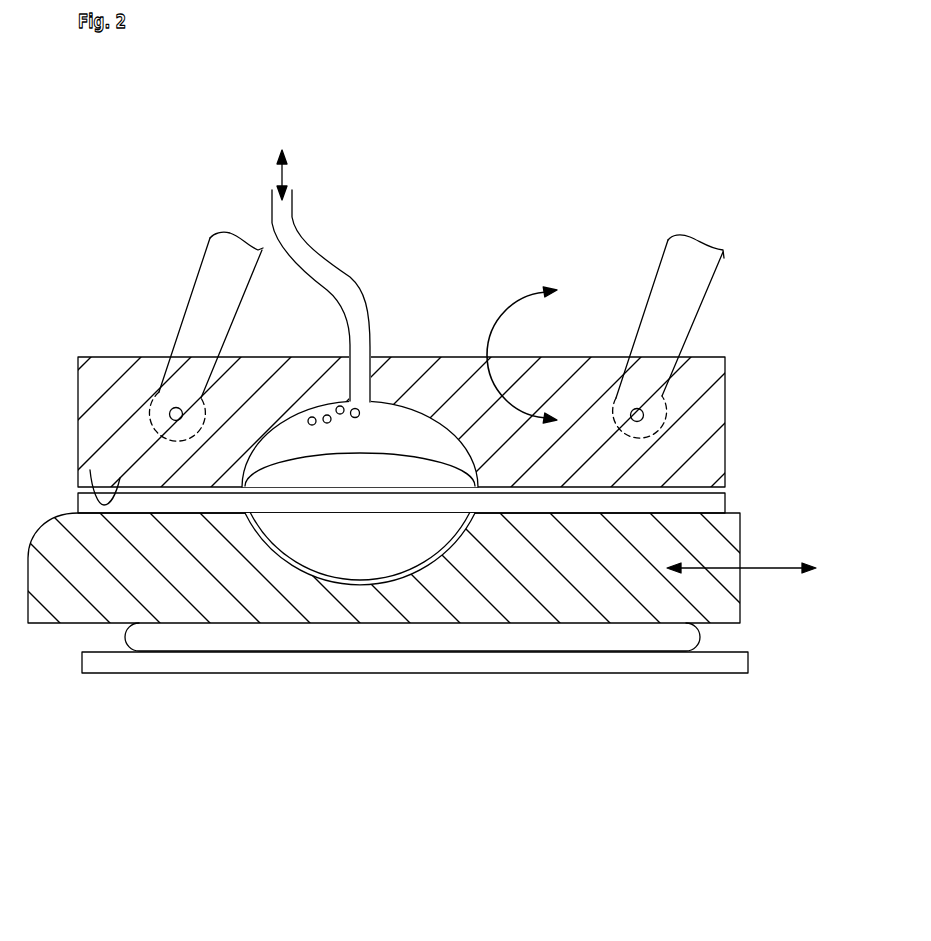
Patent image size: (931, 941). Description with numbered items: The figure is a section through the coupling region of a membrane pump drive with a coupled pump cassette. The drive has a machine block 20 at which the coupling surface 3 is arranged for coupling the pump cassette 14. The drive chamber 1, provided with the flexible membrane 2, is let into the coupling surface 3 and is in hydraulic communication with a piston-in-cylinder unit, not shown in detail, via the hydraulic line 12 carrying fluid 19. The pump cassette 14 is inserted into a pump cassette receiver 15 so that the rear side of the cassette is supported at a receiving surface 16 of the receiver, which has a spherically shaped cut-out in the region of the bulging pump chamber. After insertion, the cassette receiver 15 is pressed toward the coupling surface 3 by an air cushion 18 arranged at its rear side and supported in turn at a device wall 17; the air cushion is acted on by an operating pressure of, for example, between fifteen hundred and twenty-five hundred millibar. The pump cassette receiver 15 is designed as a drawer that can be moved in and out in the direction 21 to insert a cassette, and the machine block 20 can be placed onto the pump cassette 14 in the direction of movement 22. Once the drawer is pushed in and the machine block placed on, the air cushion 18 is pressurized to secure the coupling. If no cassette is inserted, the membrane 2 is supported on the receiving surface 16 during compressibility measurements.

The drive chamber 1 is at (285, 448).
The flexible membrane 2 is at (412, 458).
The coupling surface 3 is at (90, 470).
The hydraulic line 12 is at (337, 283).
The pump cassette 14 is at (702, 507).
The pump cassette receiver 15 is at (98, 587).
The receiving surface 16 is at (442, 560).
The device wall 17 is at (592, 665).
The air cushion 18 is at (393, 633).
The fluid 19 is at (350, 397).
The machine block 20 is at (702, 378).
The direction of drawer movement 21 is at (783, 568).
The direction of movement of machine block 22 is at (517, 305).